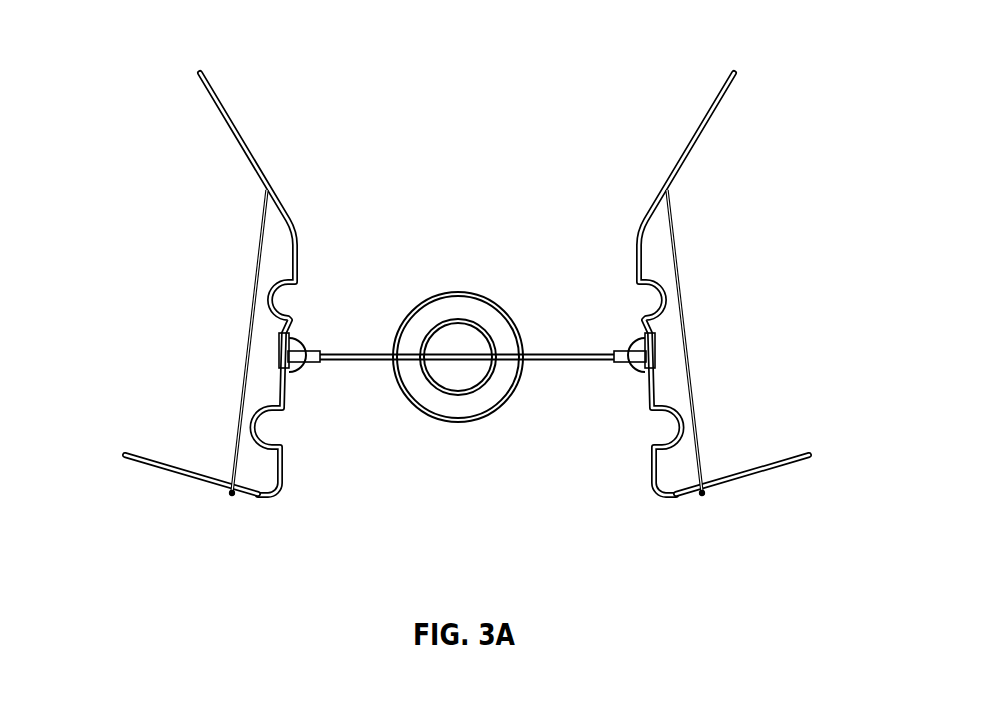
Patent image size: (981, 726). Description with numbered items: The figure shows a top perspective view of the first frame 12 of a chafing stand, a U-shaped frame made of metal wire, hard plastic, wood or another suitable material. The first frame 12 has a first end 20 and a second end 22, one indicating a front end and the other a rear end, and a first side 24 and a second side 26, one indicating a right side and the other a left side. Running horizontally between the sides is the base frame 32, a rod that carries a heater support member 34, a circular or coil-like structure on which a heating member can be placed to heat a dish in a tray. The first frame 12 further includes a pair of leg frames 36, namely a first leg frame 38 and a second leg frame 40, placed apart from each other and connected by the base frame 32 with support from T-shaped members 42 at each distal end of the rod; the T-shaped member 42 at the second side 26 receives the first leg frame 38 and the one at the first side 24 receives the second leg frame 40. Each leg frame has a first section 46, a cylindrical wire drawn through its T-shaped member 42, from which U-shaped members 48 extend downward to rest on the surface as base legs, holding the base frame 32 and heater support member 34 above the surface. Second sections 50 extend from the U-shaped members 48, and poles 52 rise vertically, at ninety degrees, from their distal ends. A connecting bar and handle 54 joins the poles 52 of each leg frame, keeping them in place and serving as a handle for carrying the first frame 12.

The first frame 12 is at (122, 42).
The first end 20 is at (460, 498).
The second end 22 is at (459, 115).
The first side 24 is at (788, 237).
The second side 26 is at (157, 237).
The base frame 32 is at (567, 352).
The heater support member 34 is at (503, 307).
The leg frames 36 is at (251, 504).
The first leg frame 38 is at (278, 488).
The second leg frame 40 is at (683, 494).
The T-shaped member 42 is at (300, 351).
The first section 46 is at (283, 395).
The U-shaped members 48 is at (275, 297).
The second sections 50 is at (300, 260).
The poles 52 is at (258, 165).
The connecting bar and handle 54 is at (237, 438).